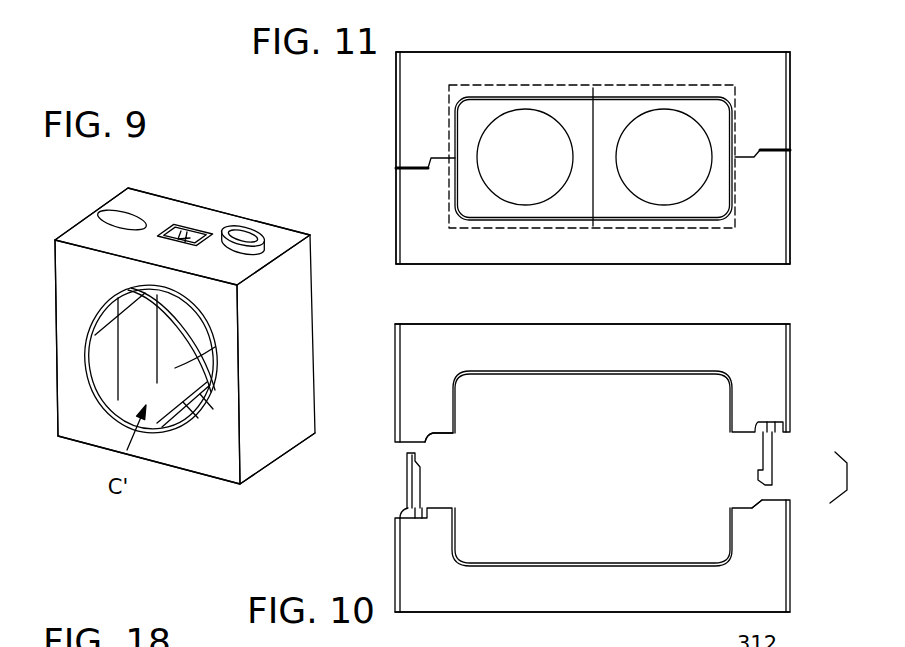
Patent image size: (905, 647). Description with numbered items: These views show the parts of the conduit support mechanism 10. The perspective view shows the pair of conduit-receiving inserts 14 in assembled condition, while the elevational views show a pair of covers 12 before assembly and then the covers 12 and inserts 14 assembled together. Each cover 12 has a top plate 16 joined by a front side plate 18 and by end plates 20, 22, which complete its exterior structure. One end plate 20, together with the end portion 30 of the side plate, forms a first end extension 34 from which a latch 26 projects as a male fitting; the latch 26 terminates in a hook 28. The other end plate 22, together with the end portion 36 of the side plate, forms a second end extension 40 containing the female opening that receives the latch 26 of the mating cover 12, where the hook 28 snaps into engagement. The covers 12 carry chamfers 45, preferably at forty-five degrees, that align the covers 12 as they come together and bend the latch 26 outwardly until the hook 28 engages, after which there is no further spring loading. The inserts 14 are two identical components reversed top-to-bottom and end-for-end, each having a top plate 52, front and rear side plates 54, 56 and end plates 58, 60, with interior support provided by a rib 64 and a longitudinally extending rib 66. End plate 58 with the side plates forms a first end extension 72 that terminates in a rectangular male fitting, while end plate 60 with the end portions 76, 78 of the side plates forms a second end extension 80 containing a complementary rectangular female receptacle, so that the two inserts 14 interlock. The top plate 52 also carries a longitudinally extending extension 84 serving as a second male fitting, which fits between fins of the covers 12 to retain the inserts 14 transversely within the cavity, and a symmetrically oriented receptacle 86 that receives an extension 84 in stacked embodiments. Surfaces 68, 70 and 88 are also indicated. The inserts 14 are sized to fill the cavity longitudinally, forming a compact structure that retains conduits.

In FIG. 11, the support mechanism 10 is at (797, 60).
In FIG. 11, the cover 12 is at (792, 103).
In FIG. 10, the cover 12 is at (792, 343).
In FIG. 11, the insert 14 is at (563, 106).
In FIG. 11, the top plate 16 is at (505, 52).
In FIG. 10, the top plate 16 is at (620, 323).
In FIG. 11, the front side plate 18 is at (687, 68).
In FIG. 10, the front side plate 18 is at (530, 338).
In FIG. 11, the end plate 20 is at (397, 83).
In FIG. 10, the end plate 20 is at (393, 347).
In FIG. 11, the end plate 22 is at (397, 222).
In FIG. 10, the end plate 22 is at (395, 573).
In FIG. 10, the latch 26 is at (412, 487).
In FIG. 10, the hook 28 is at (422, 455).
In FIG. 11, the end portion of side plate 30 is at (418, 140).
In FIG. 10, the end portion of side plate 30 is at (418, 405).
In FIG. 11, the first end extension 34 is at (397, 113).
In FIG. 10, the first end extension 34 is at (395, 388).
In FIG. 11, the end portion of side plate 36 is at (417, 183).
In FIG. 10, the end portion of side plate 36 is at (415, 530).
In FIG. 11, the second end extension 40 is at (397, 198).
In FIG. 10, the second end extension 40 is at (392, 545).
In FIG. 11, the chamfer 45 is at (462, 158).
In FIG. 10, the chamfer 45 is at (440, 437).
In FIG. 9, the top plate 52 is at (88, 228).
In FIG. 9, the front side plate 54 is at (288, 228).
In FIG. 9, the rear side plate 56 is at (213, 447).
In FIG. 9, the end plate 58 is at (58, 408).
In FIG. 9, the end plate 60 is at (53, 267).
In FIG. 9, the rib 64 is at (220, 438).
In FIG. 9, the longitudinally extending rib 66 is at (135, 382).
In FIG. 9, the face 68 is at (83, 413).
In FIG. 9, the edge 70 is at (68, 298).
In FIG. 9, the first end extension 72 is at (70, 358).
In FIG. 9, the end portion of side plate 76 is at (305, 352).
In FIG. 9, the end portion of side plate 78 is at (70, 380).
In FIG. 9, the second end extension 80 is at (68, 327).
In FIG. 9, the extension 84 is at (245, 232).
In FIG. 9, the receptacle 86 is at (125, 222).
In FIG. 9, the window 88 is at (185, 230).